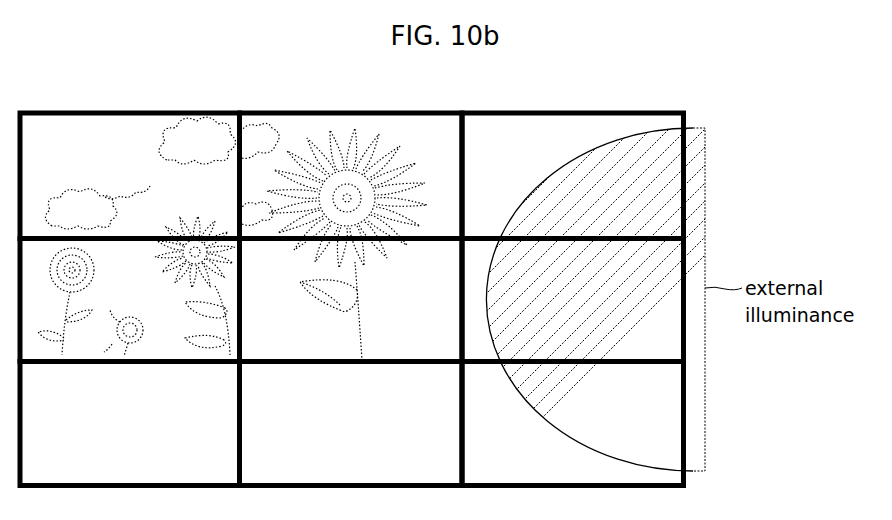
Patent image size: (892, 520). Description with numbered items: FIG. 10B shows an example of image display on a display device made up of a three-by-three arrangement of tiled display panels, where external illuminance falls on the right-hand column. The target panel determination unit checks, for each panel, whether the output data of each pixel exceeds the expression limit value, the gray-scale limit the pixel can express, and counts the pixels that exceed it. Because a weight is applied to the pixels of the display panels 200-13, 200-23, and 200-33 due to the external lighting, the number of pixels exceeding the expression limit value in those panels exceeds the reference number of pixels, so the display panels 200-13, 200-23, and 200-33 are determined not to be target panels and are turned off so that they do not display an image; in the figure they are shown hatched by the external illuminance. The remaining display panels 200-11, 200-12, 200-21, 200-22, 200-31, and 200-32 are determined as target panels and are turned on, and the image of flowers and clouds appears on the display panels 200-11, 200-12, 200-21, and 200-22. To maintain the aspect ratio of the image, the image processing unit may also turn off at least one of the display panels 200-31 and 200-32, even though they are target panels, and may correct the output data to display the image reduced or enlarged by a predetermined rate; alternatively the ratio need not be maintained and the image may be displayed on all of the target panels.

The display panel 200-11 is at (130, 176).
The display panel 200-12 is at (351, 176).
The display panel 200-13 is at (573, 176).
The display panel 200-21 is at (130, 300).
The display panel 200-22 is at (351, 300).
The display panel 200-23 is at (573, 300).
The display panel 200-31 is at (130, 424).
The display panel 200-32 is at (351, 424).
The display panel 200-33 is at (573, 424).